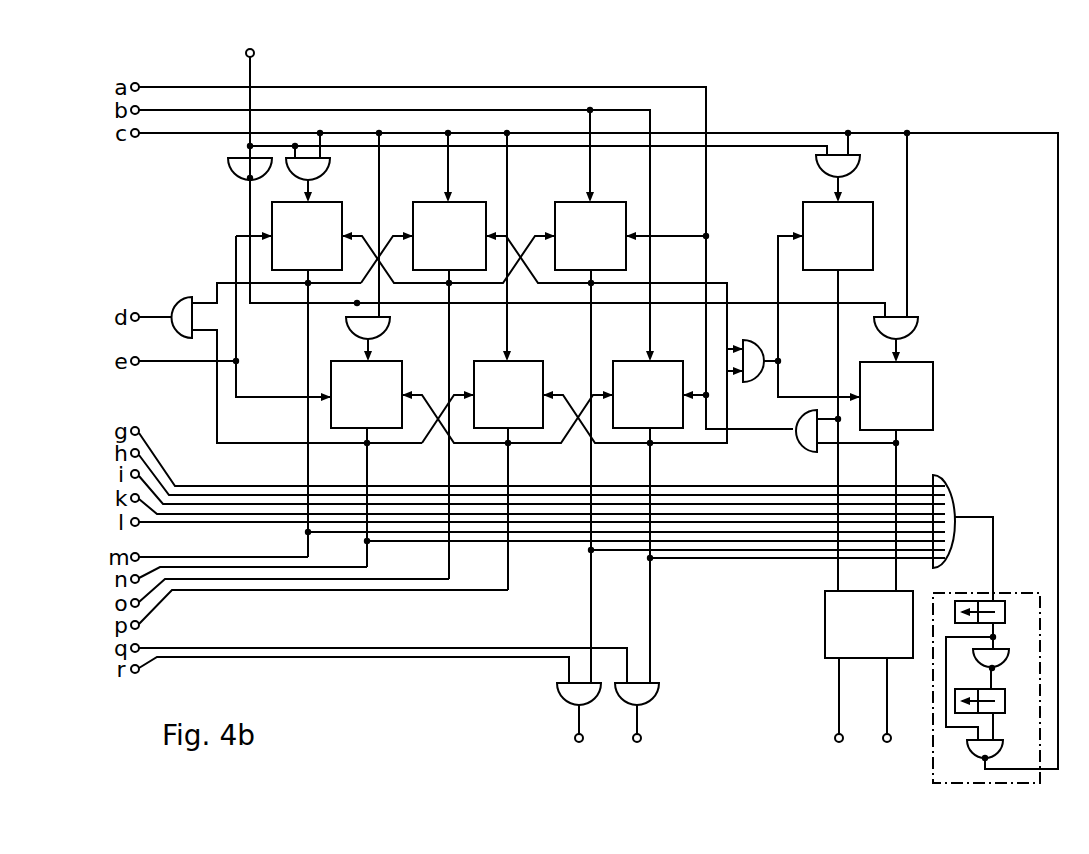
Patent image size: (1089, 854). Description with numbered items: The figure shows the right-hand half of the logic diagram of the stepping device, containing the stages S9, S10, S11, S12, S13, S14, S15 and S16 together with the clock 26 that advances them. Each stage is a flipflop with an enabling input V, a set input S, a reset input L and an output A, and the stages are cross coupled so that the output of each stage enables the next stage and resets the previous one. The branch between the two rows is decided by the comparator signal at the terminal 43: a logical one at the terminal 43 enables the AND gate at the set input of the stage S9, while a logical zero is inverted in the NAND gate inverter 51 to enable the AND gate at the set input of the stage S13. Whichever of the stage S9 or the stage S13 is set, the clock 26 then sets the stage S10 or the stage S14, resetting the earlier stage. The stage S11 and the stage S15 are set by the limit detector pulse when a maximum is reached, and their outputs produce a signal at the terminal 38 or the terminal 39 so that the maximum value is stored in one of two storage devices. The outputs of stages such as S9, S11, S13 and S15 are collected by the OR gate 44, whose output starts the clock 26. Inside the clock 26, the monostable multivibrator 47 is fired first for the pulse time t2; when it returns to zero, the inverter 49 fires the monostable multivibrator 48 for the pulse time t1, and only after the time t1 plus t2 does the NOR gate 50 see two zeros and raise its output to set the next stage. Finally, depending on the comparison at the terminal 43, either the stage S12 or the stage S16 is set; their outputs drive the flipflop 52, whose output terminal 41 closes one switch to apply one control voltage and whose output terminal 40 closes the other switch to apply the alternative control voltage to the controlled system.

The terminal 43 is at (266, 54).
The NAND gate inverter 51 is at (255, 174).
The stage S9 is at (338, 192).
The stage S10 is at (455, 202).
The stage S11 is at (597, 202).
The stage S12 is at (848, 202).
The stage S13 is at (385, 361).
The stage S14 is at (520, 361).
The stage S15 is at (660, 361).
The stage S16 is at (908, 362).
The OR gate 44 is at (936, 478).
The flipflop 52 is at (869, 624).
The terminal 38 is at (579, 727).
The terminal 39 is at (637, 727).
The output terminal 40 is at (887, 714).
The output terminal 41 is at (837, 714).
The clock 26 is at (1012, 594).
The monostable multivibrator 47 is at (996, 626).
The inverter 49 is at (1003, 661).
The monostable multivibrator 48 is at (987, 691).
The NOR gate 50 is at (1003, 748).
The pulse time t1 is at (1005, 701).
The pulse time t2 is at (1005, 612).